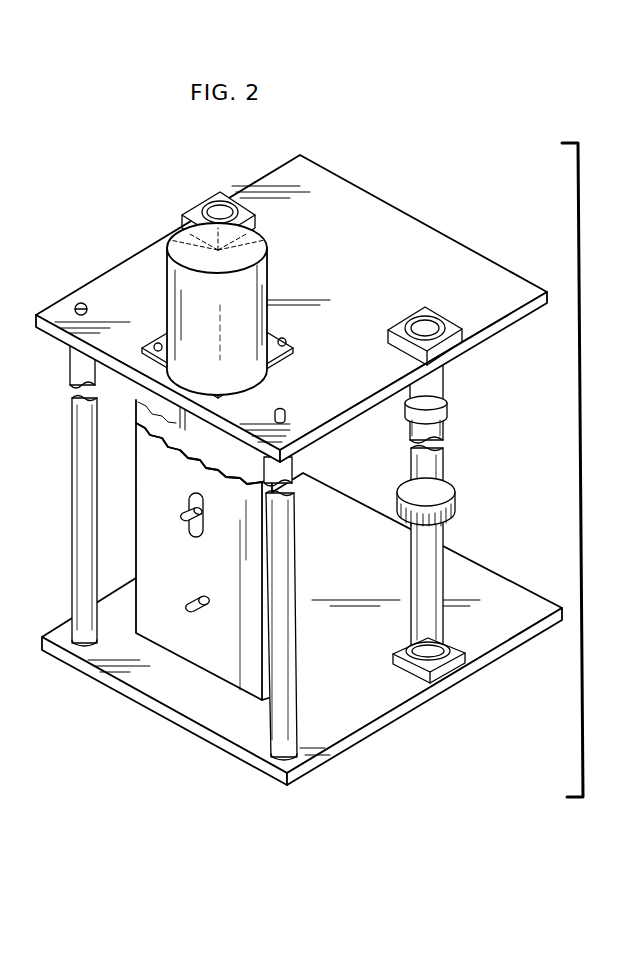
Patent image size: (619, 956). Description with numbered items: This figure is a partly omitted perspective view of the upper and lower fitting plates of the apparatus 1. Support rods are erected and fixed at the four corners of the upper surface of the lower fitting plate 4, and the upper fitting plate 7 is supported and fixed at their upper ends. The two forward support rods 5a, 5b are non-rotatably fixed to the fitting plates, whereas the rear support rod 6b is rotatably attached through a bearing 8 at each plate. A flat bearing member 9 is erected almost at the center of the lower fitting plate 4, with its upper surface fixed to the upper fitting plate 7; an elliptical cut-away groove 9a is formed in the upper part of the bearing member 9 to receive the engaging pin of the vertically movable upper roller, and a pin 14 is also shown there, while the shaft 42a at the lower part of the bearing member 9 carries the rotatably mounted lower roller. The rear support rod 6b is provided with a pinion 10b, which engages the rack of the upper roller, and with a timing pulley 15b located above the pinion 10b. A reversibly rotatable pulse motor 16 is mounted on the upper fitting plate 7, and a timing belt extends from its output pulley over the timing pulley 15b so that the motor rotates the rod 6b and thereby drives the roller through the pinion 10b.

The apparatus 1 is at (291, 457).
The lower fitting plate 4 is at (150, 688).
The support rod 5a is at (72, 537).
The support rod 5b is at (295, 666).
The support rod 6b is at (444, 585).
The upper fitting plate 7 is at (131, 262).
The bearing 8 is at (220, 195).
The bearing member 9 is at (228, 670).
The cut-away groove 9a is at (189, 498).
The pinion 10b is at (458, 494).
The pin 14 is at (183, 523).
The timing pulley 15b is at (448, 409).
The pulse motor 16 is at (251, 297).
The shaft 42a is at (186, 619).